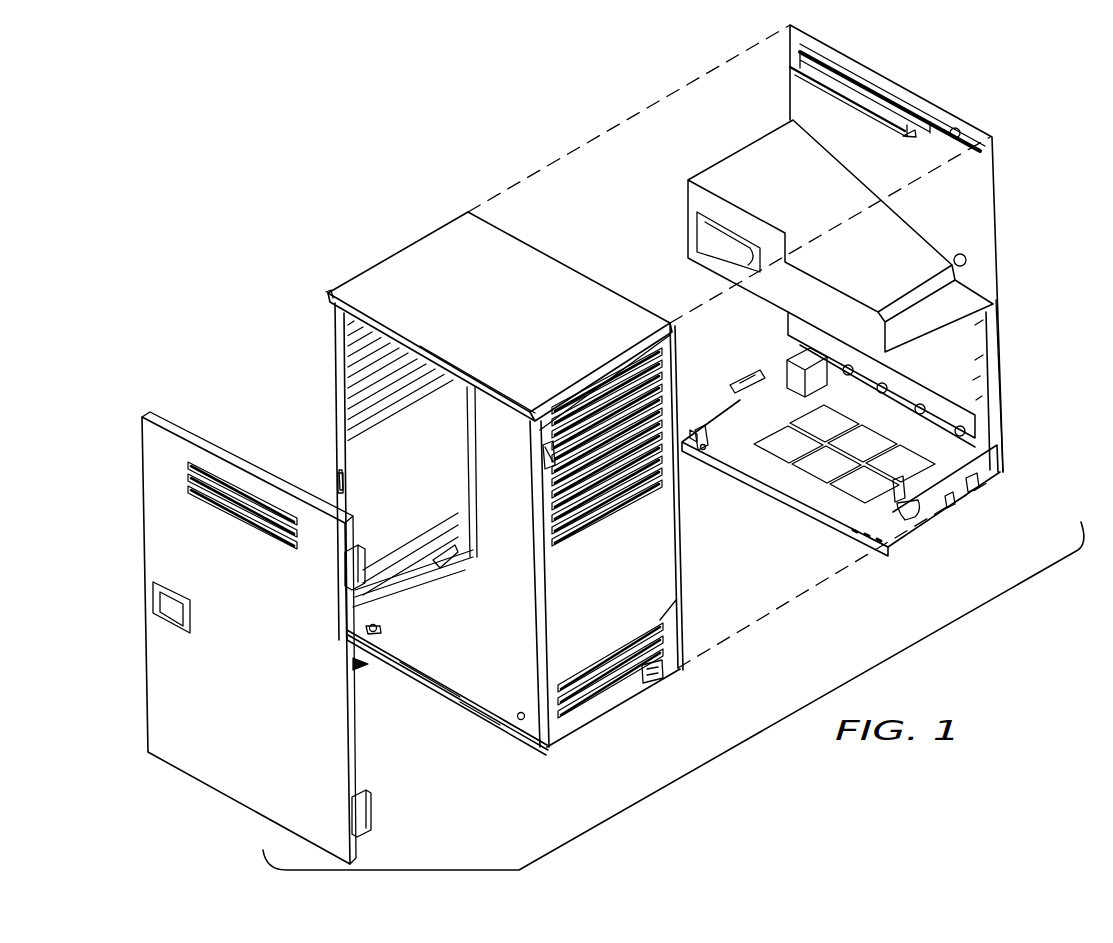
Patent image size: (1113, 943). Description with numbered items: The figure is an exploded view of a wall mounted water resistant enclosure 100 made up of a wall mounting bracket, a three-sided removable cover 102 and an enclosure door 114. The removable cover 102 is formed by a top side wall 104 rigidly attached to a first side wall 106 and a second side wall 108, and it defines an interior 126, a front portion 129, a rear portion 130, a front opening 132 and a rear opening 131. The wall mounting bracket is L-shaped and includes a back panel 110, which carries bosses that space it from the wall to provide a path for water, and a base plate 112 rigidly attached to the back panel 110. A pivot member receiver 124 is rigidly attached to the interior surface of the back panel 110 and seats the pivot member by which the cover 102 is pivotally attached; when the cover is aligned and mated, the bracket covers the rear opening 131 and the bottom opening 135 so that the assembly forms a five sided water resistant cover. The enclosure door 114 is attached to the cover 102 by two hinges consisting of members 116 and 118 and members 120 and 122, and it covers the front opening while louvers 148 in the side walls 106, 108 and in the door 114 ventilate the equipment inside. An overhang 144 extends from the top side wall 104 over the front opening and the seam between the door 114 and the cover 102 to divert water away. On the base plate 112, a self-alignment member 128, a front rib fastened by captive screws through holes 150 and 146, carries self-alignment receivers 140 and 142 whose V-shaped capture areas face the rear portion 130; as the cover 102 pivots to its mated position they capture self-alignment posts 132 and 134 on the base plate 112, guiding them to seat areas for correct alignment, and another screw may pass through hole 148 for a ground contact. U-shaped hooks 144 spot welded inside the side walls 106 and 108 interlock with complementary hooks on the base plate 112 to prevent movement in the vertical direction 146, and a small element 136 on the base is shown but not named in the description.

The water resistant enclosure 100 is at (905, 36).
The three-sided removable cover 102 is at (408, 228).
The top side wall 104 is at (473, 232).
The first side wall 106 is at (337, 378).
The second side wall 108 is at (650, 592).
The back panel 110 is at (1012, 161).
The base plate 112 is at (920, 522).
The enclosure door 114 is at (213, 770).
The hinge member 116 is at (545, 467).
The hinge member 118 is at (522, 688).
The hinge member 120 is at (343, 562).
The hinge member 122 is at (372, 800).
The pivot member receiver 124 is at (920, 105).
The interior 126 is at (482, 633).
The self-alignment member 128 is at (453, 700).
The front portion 129 is at (418, 713).
The rear portion 130 is at (792, 107).
The rear opening 131 is at (541, 246).
The self-alignment post 132 is at (368, 457).
The self-alignment post 134 is at (683, 447).
The bottom opening 135 is at (490, 717).
The mounting bracket 136 is at (760, 362).
The self-alignment receiver 140 is at (521, 722).
The self-alignment receiver 142 is at (377, 630).
The overhang 144 is at (328, 297).
The hole 146 is at (847, 537).
The louvers 148 is at (583, 530).
The hole 150 is at (705, 440).